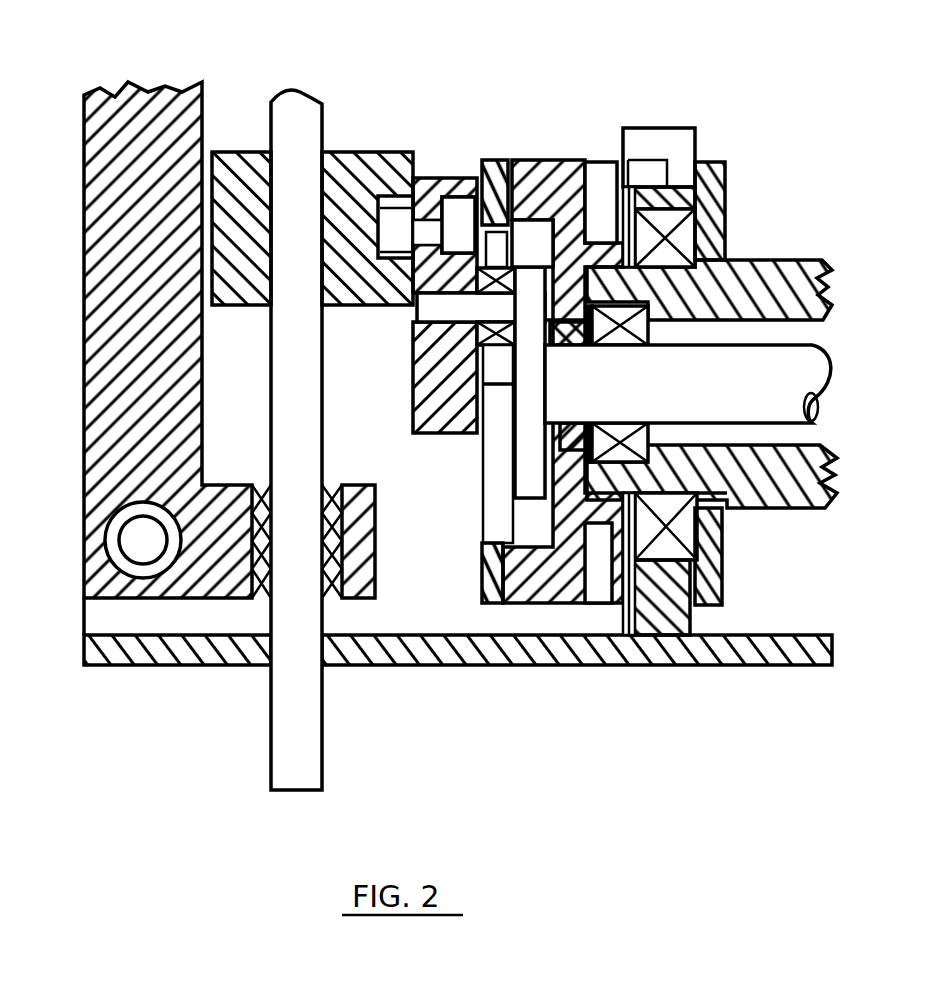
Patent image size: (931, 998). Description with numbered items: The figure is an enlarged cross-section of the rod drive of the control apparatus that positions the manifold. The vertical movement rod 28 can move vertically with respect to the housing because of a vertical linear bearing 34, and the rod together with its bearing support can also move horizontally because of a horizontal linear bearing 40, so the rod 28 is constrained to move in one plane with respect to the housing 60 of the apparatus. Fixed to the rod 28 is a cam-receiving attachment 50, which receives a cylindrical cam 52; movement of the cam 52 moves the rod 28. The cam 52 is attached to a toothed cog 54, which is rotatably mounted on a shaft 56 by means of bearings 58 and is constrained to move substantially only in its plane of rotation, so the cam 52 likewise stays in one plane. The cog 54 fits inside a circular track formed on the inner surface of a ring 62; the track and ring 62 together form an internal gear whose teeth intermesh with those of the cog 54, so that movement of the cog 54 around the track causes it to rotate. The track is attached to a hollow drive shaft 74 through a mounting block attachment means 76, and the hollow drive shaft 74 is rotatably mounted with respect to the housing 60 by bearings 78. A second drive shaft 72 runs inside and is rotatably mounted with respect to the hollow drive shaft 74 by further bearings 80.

The movement rod 28 is at (265, 740).
The vertical linear bearing 34 is at (260, 483).
The horizontal linear bearing 40 is at (105, 548).
The cam-receiving attachment 50 is at (358, 147).
The cam 52 is at (400, 212).
The cog 54 is at (522, 240).
The shaft 56 is at (408, 313).
The bearings 58 is at (477, 332).
The housing 60 is at (694, 668).
The ring 62 is at (480, 155).
The drive shaft 72 is at (748, 396).
The hollow drive shaft 74 is at (760, 259).
The mounting block attachment means 76 is at (523, 607).
The bearings 78 is at (662, 550).
The bearings 80 is at (612, 422).